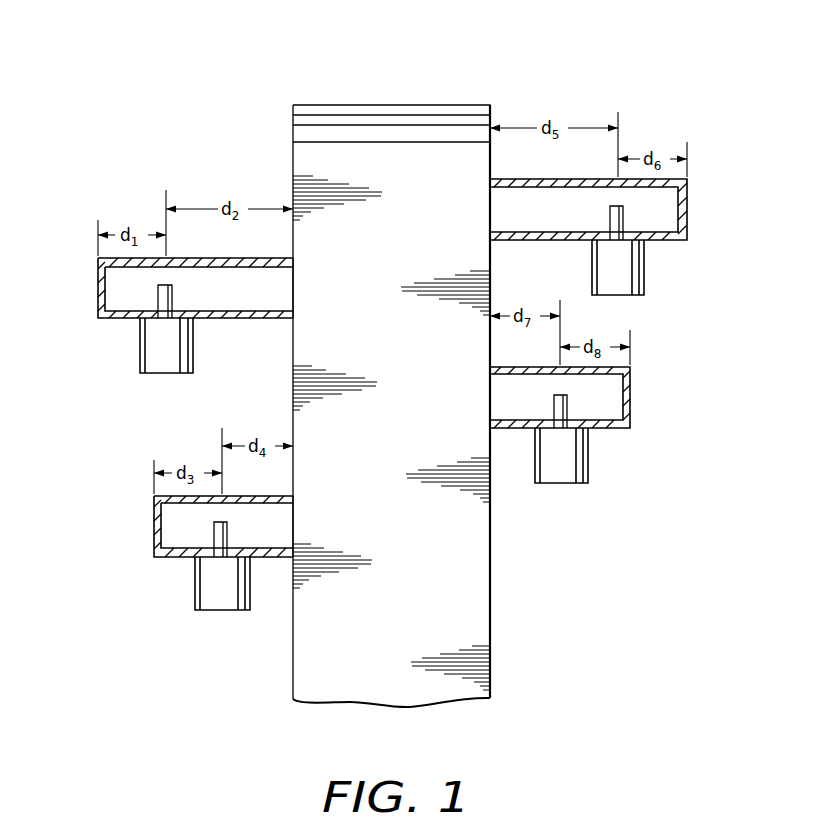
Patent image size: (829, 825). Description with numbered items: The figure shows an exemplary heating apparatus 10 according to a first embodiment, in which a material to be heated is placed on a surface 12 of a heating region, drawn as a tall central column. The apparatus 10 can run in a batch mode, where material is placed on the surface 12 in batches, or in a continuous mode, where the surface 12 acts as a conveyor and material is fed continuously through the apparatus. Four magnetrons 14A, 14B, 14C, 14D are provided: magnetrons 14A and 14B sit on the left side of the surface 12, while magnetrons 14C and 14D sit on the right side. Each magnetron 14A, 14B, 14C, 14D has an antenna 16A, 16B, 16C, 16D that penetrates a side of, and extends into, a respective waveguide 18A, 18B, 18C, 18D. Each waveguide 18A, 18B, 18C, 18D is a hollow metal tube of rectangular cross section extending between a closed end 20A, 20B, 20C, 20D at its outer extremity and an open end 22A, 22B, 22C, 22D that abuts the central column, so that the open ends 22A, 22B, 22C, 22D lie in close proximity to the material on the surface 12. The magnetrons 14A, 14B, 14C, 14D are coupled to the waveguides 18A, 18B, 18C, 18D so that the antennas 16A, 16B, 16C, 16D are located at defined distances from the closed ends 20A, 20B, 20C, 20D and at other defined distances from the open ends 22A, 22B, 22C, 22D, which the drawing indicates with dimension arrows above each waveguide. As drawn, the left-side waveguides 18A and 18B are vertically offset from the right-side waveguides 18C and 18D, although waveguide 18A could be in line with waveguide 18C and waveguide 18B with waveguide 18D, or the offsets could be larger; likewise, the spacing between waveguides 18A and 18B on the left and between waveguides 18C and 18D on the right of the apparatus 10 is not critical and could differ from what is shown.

The heating apparatus 10 is at (706, 81).
The surface 12 is at (403, 257).
The magnetron 14A is at (140, 342).
The magnetron 14B is at (195, 583).
The magnetron 14C is at (644, 262).
The magnetron 14D is at (588, 450).
The antenna 16A is at (172, 290).
The antenna 16B is at (227, 527).
The antenna 16C is at (623, 212).
The antenna 16D is at (567, 400).
The waveguide 18A is at (262, 297).
The waveguide 18B is at (273, 538).
The waveguide 18C is at (548, 215).
The waveguide 18D is at (518, 405).
The closed end 20A is at (98, 283).
The closed end 20B is at (154, 523).
The closed end 20C is at (687, 210).
The closed end 20D is at (630, 398).
The open end 22A is at (293, 288).
The open end 22B is at (293, 524).
The open end 22C is at (490, 205).
The open end 22D is at (490, 395).